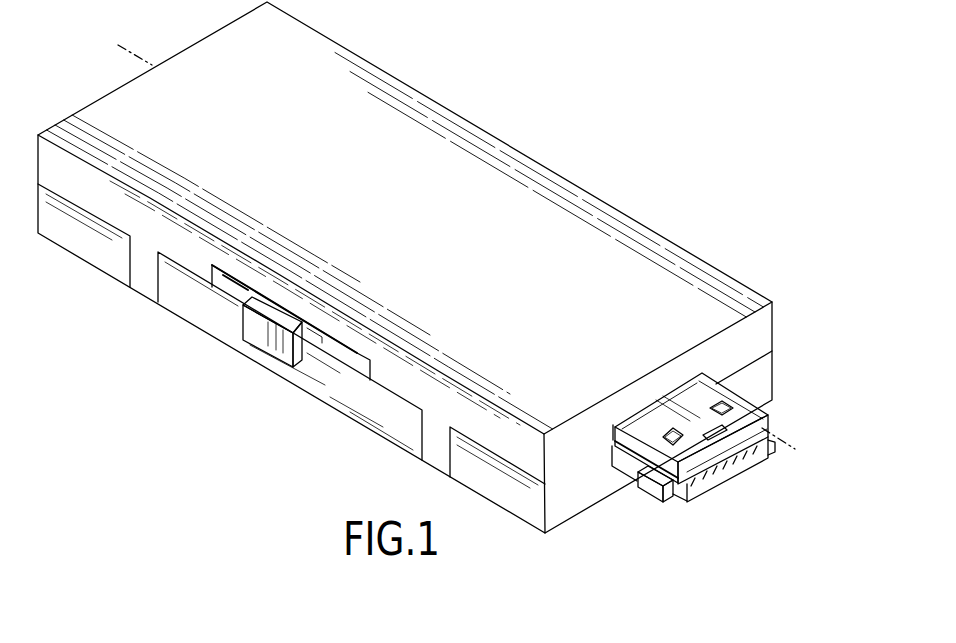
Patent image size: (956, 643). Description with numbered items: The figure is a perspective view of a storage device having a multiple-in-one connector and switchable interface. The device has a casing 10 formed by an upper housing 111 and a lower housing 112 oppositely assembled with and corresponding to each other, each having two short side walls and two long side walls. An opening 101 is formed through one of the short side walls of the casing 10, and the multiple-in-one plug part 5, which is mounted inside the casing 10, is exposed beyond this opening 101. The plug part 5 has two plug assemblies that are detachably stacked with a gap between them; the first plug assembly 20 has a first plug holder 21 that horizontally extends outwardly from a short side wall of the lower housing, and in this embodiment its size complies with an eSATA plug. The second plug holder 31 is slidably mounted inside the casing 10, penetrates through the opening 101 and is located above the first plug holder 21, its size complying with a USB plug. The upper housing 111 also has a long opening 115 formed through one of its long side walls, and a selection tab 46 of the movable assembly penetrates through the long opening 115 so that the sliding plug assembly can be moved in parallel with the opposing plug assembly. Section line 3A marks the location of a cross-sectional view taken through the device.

The casing 10 is at (541, 148).
The upper housing 111 is at (627, 245).
The lower housing 112 is at (752, 389).
The long opening 115 is at (333, 350).
The selection tab 46 is at (270, 338).
The opening 101 is at (620, 428).
The multiple-in-one plug part 5 is at (748, 518).
The first plug assembly 20 is at (655, 505).
The first plug holder 21 is at (716, 488).
The second plug holder 31 is at (740, 465).
The section line 3A is at (143, 53).